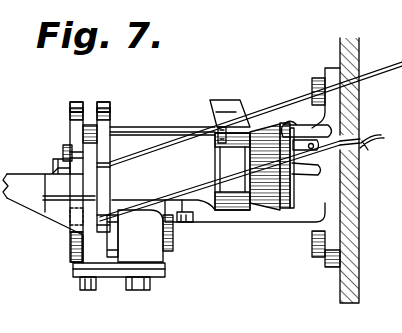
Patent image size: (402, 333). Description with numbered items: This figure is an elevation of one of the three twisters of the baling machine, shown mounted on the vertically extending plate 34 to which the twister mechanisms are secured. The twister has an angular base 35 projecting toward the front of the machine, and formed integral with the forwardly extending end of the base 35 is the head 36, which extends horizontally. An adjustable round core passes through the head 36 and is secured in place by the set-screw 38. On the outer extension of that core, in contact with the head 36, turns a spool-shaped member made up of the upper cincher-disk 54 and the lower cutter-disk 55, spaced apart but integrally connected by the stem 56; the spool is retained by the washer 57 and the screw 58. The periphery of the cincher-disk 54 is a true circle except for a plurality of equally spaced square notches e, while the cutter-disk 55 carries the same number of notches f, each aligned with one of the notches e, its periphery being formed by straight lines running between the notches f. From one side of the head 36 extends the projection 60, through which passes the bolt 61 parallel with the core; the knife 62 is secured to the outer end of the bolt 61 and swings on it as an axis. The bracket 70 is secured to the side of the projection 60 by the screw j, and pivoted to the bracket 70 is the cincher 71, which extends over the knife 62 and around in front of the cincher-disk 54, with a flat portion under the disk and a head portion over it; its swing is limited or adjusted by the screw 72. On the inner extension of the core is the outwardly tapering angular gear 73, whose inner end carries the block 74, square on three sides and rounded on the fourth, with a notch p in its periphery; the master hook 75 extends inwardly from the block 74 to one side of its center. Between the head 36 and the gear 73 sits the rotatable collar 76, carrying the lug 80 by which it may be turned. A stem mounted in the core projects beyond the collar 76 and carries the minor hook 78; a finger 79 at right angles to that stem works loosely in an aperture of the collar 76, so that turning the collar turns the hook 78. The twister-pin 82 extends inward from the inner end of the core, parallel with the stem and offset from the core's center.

The plate 34 is at (360, 294).
The angular base 35 is at (323, 268).
The head 36 is at (147, 128).
The set-screw 38 is at (186, 224).
The cincher-disk 54 is at (70, 110).
The cutter-disk 55 is at (114, 108).
The stem 56 is at (86, 125).
The washer 57 is at (66, 151).
The screw 58 is at (54, 165).
The projection 60 is at (140, 236).
The bolt 61 is at (171, 250).
The knife 62 is at (112, 258).
The bracket 70 is at (72, 268).
The cincher 71 is at (53, 214).
The screw 72 is at (83, 288).
The angular gear 73 is at (263, 206).
The block 74 is at (289, 201).
The master hook 75 is at (345, 119).
The collar 76 is at (238, 212).
The minor hook 78 is at (358, 146).
The finger 79 is at (215, 142).
The lug 80 is at (233, 98).
The twister-pin 82 is at (320, 171).
The square notches e is at (73, 101).
The notches f is at (107, 101).
The screw j is at (144, 287).
The notch p is at (292, 165).